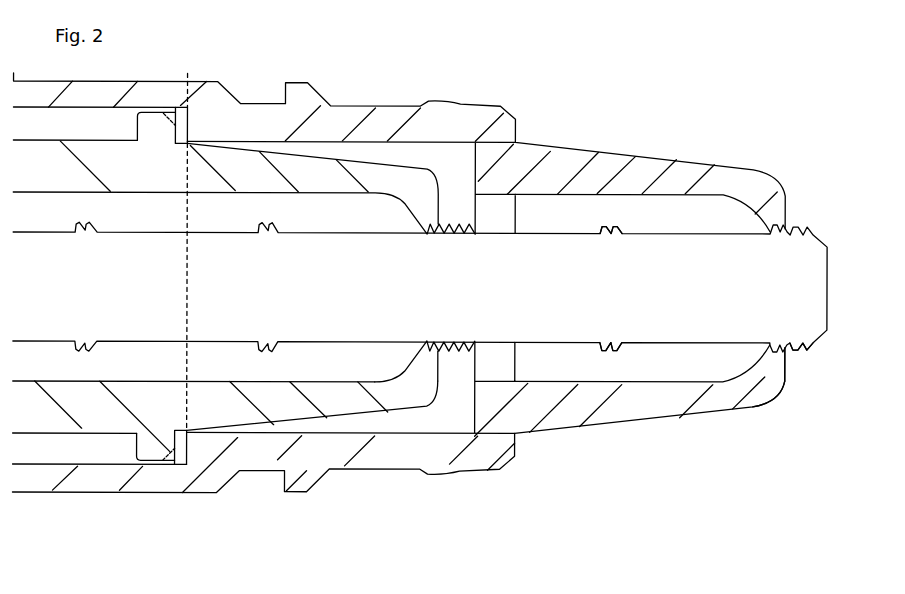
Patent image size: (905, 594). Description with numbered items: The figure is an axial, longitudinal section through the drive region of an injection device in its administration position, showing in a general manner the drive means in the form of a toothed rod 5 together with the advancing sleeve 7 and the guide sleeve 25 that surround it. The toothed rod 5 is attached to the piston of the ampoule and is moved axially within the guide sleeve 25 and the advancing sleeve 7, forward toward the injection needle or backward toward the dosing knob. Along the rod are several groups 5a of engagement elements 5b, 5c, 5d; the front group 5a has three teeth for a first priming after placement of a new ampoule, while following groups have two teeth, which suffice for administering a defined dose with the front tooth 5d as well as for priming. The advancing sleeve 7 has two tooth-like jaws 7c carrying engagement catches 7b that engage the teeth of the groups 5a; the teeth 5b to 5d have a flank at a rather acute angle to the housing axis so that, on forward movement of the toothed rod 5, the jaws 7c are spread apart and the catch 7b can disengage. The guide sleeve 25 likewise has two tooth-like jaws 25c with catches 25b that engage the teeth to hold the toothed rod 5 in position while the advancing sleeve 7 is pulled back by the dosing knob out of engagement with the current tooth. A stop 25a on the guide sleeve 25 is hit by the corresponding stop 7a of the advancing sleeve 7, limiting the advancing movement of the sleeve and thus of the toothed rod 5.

The toothed rod 5 is at (568, 265).
The group of engagement elements 5a is at (605, 362).
The engagement element 5b is at (795, 349).
The engagement element 5c is at (605, 230).
The front tooth 5d is at (618, 346).
The advancing sleeve 7 is at (60, 405).
The stop 7a is at (145, 452).
The engagement catch 7b is at (435, 350).
The tooth-like jaw 7c is at (423, 373).
The guide sleeve 25 is at (345, 457).
The stop 25a is at (187, 448).
The catch 25b is at (778, 348).
The tooth-like jaw 25c is at (763, 375).